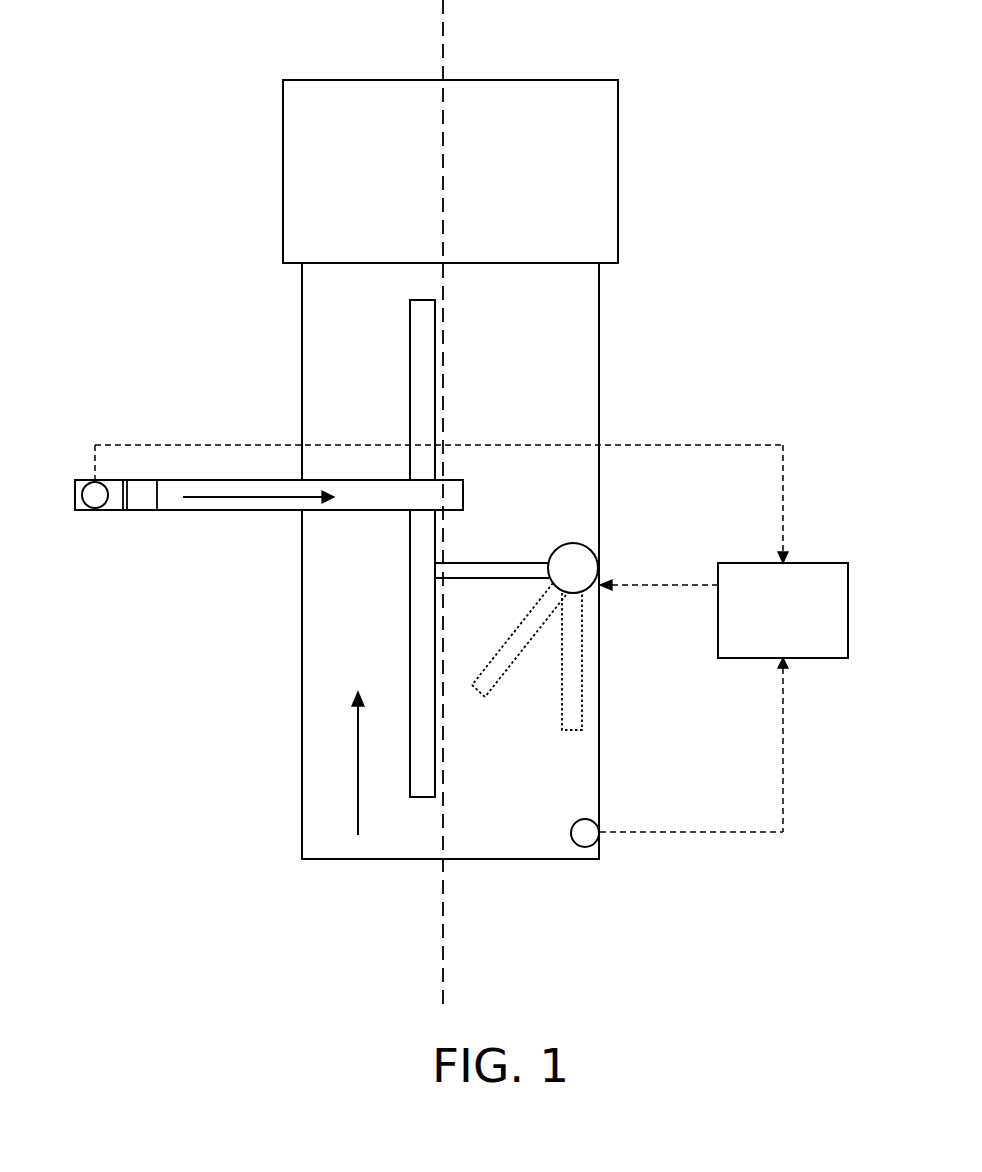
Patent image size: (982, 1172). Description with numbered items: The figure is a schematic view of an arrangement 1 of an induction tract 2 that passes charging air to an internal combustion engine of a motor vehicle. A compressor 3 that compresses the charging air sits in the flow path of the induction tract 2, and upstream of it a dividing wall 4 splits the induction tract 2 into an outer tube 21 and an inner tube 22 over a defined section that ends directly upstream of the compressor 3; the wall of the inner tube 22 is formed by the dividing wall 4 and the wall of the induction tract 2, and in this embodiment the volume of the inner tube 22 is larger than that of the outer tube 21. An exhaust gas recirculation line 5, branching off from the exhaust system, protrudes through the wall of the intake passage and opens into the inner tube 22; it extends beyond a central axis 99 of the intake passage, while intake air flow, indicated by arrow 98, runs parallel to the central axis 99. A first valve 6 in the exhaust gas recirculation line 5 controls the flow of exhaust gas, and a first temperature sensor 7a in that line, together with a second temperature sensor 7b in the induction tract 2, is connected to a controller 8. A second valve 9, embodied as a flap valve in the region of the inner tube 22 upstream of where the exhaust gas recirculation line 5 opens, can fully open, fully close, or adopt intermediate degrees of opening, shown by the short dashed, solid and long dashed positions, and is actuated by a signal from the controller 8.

The arrangement 1 is at (705, 92).
The induction tract 2 is at (302, 833).
The outer tube 21 is at (313, 620).
The inner tube 22 is at (582, 465).
The compressor 3 is at (283, 143).
The dividing wall 4 is at (423, 363).
The exhaust gas recirculation line 5 is at (203, 480).
The first valve 6 is at (145, 495).
The first temperature sensor 7a is at (95, 505).
The second temperature sensor 7b is at (585, 848).
The controller 8 is at (793, 660).
The second valve 9 is at (575, 560).
The arrow 98 is at (358, 767).
The central axis 99 is at (443, 934).